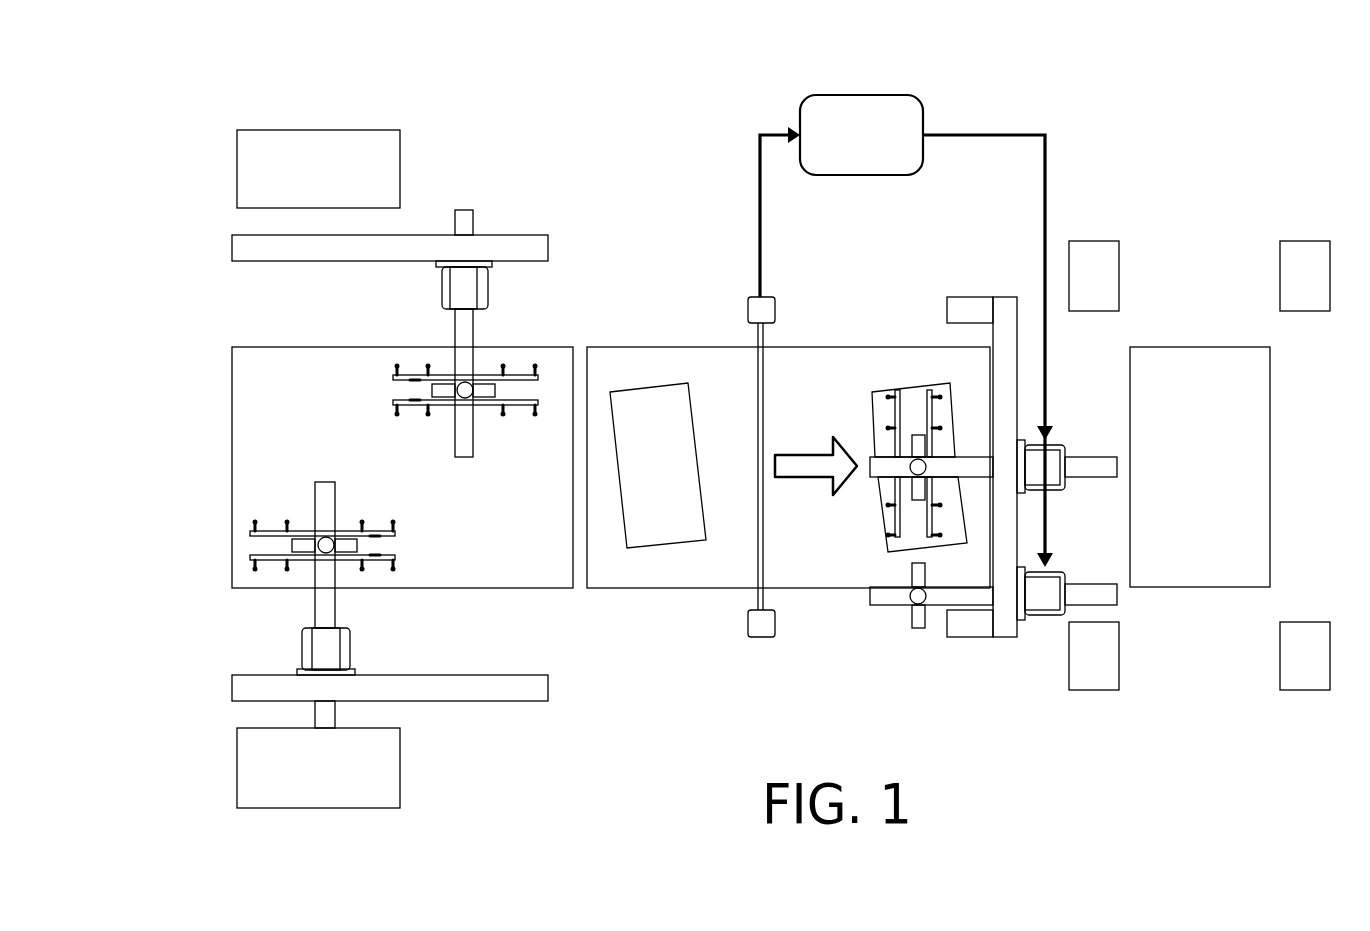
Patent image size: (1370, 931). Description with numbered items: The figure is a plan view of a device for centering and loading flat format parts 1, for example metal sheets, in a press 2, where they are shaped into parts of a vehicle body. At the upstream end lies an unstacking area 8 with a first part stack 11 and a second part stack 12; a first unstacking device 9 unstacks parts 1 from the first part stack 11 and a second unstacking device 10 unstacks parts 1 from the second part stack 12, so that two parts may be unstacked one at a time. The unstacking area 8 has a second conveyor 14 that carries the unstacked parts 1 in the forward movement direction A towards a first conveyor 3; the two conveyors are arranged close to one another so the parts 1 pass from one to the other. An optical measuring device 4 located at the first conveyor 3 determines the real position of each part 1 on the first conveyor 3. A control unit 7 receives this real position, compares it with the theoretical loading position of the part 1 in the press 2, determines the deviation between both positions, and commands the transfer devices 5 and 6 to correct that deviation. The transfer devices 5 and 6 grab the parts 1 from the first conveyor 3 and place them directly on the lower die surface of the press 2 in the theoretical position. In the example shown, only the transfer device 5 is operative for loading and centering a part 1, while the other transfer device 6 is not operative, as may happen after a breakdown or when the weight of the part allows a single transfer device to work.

The flat format part 1 is at (353, 165).
The press 2 is at (1211, 497).
The first conveyor 3 is at (722, 372).
The optical measuring device 4 is at (760, 490).
The transfer device 5 is at (1063, 452).
The transfer device 6 is at (1045, 593).
The control unit 7 is at (862, 135).
The unstacking area 8 is at (263, 467).
The first unstacking device 9 is at (462, 283).
The second unstacking device 10 is at (317, 648).
The first part stack 11 is at (255, 177).
The second part stack 12 is at (252, 772).
The second conveyor 14 is at (303, 393).
The forward movement direction A is at (808, 467).